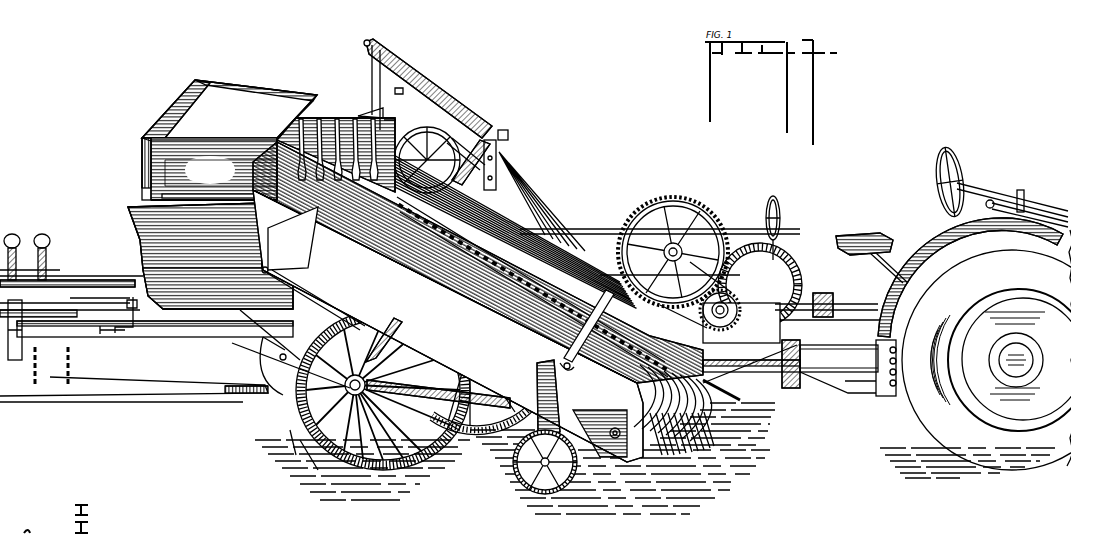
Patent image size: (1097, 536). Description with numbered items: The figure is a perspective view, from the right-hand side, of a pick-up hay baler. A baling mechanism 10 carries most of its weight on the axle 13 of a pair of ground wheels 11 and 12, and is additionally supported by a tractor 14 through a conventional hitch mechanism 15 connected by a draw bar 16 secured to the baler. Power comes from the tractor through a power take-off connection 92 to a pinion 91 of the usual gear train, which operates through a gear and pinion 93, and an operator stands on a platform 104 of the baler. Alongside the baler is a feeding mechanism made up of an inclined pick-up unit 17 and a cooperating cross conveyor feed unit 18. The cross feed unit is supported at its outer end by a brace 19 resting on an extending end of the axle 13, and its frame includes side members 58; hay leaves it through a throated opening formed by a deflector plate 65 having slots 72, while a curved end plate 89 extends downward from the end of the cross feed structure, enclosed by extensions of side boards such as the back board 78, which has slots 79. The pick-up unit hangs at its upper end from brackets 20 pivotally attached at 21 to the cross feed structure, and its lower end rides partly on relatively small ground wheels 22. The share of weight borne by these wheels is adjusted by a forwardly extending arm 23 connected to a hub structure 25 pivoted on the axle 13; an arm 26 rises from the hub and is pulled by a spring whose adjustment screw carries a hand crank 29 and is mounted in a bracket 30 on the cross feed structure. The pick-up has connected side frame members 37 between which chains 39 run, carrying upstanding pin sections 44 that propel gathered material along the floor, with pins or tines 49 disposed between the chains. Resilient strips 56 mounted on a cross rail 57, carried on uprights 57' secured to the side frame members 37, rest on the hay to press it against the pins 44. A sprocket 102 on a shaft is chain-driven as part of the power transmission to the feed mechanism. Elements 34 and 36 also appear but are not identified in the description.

The baling mechanism 10 is at (165, 340).
The ground wheel 11 is at (500, 430).
The ground wheel 12 is at (392, 470).
The axle 13 is at (297, 400).
The tractor 14 is at (1020, 237).
The hitch mechanism 15 is at (905, 385).
The draw bar 16 is at (832, 354).
The pick-up unit 17 is at (520, 329).
The cross conveyor feed unit 18 is at (204, 140).
The brace 19 is at (285, 380).
The brackets 20 is at (478, 302).
The pivotal attachment 21 is at (272, 276).
The ground wheels 22 is at (546, 495).
The forwardly extending arm 23 is at (503, 403).
The hub structure 25 is at (350, 392).
The arm 26 is at (377, 356).
The hand crank 29 is at (110, 328).
The bracket 30 is at (133, 295).
The tie rod 34 is at (557, 227).
The hand wheel 36 is at (777, 206).
The side frame members 37 is at (630, 512).
The chains 39 is at (530, 306).
The pin sections 44 is at (557, 340).
The pins or tines 49 is at (700, 430).
The drive belt 56 is at (591, 253).
The cross rail 57 is at (673, 234).
The uprights 57' is at (587, 347).
The side members 58 is at (200, 150).
The deflector plate 65 is at (278, 131).
The slots 72 is at (311, 124).
The back board 78 is at (142, 141).
The slots 79 is at (233, 196).
The end plate 89 is at (148, 231).
The pinion 91 is at (780, 266).
The power take-off connection 92 is at (807, 337).
The gear and pinion 93 is at (697, 199).
The sprocket 102 is at (423, 141).
The platform 104 is at (123, 402).